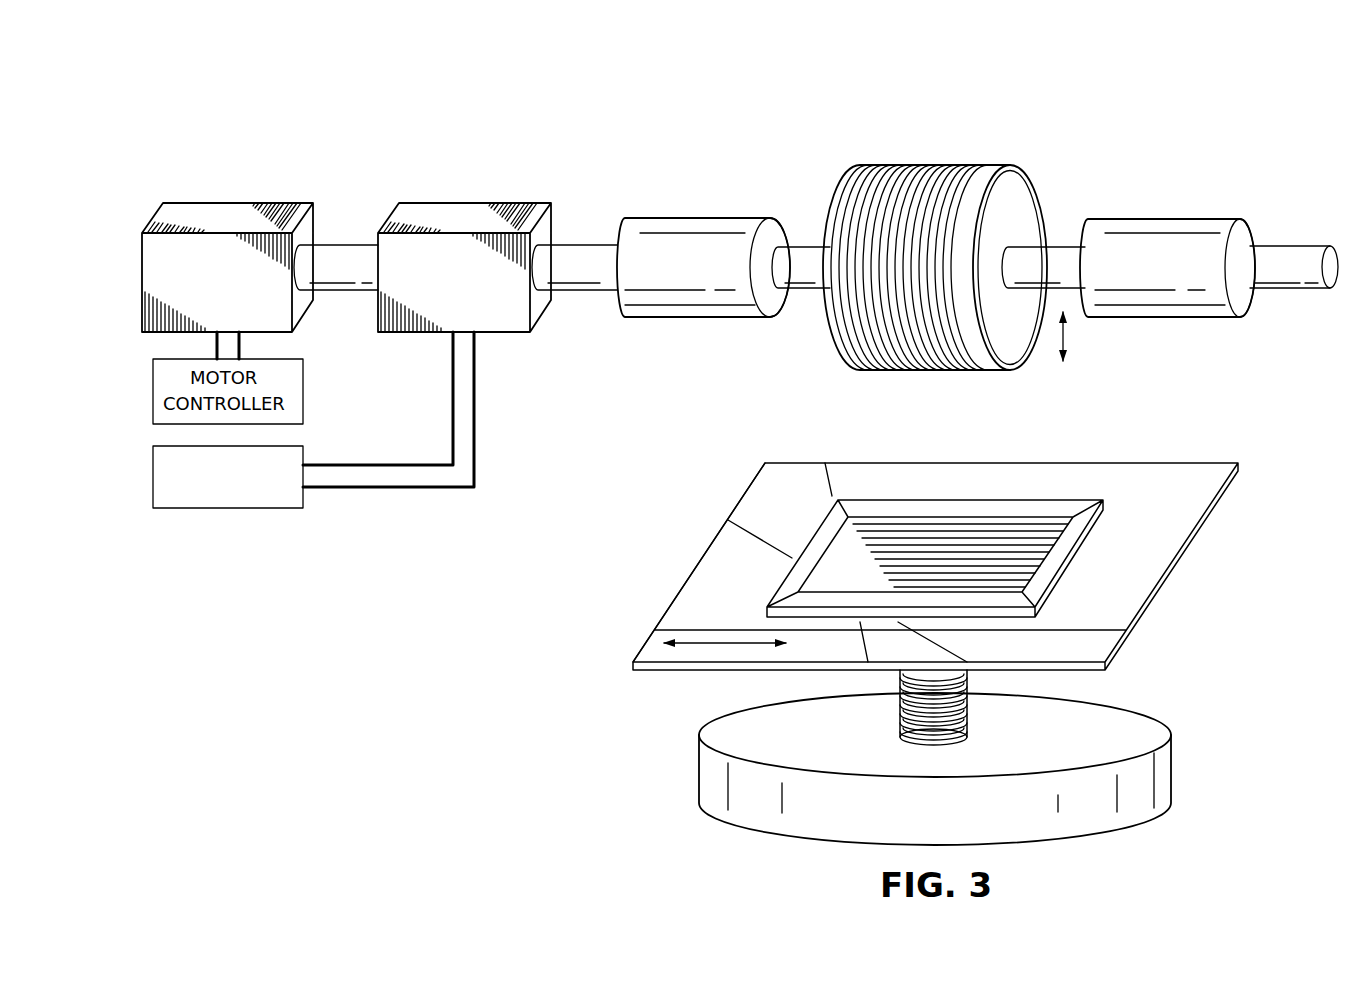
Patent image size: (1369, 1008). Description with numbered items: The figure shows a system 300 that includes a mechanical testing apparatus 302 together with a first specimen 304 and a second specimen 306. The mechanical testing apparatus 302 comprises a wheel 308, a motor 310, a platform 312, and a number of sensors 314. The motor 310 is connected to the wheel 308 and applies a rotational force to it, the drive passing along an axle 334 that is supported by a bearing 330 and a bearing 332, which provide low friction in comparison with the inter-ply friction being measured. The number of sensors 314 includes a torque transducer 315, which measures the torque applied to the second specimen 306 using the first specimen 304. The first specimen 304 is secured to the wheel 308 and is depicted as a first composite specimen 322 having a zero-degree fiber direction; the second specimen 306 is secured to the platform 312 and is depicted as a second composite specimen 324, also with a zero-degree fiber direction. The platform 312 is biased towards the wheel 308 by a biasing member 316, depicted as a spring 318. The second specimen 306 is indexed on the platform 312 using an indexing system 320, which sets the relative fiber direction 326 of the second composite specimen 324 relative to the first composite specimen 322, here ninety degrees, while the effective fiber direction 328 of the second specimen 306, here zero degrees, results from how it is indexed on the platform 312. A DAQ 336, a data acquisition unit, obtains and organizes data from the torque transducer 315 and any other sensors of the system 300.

The system 300 is at (229, 92).
The mechanical testing apparatus 302 is at (330, 128).
The first specimen 304 is at (958, 239).
The second specimen 306 is at (757, 551).
The wheel 308 is at (1020, 185).
The motor 310 is at (228, 220).
The platform 312 is at (1197, 467).
The number of sensors 314 is at (551, 122).
The torque transducer 315 is at (462, 220).
The biasing member 316 is at (1201, 736).
The spring 318 is at (968, 718).
The indexing system 320 is at (805, 450).
The first composite specimen 322 is at (950, 172).
The second composite specimen 324 is at (973, 496).
The relative fiber direction 326 is at (1064, 335).
The effective fiber direction 328 is at (697, 643).
The bearing 330 is at (700, 218).
The bearing 332 is at (1170, 218).
The axle 334 is at (807, 245).
The DAQ 336 is at (228, 510).